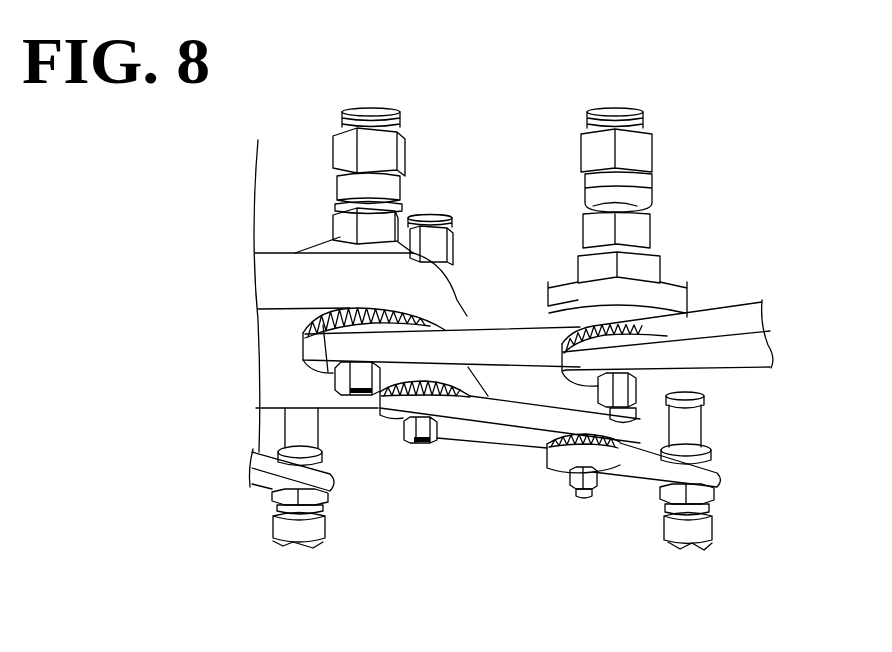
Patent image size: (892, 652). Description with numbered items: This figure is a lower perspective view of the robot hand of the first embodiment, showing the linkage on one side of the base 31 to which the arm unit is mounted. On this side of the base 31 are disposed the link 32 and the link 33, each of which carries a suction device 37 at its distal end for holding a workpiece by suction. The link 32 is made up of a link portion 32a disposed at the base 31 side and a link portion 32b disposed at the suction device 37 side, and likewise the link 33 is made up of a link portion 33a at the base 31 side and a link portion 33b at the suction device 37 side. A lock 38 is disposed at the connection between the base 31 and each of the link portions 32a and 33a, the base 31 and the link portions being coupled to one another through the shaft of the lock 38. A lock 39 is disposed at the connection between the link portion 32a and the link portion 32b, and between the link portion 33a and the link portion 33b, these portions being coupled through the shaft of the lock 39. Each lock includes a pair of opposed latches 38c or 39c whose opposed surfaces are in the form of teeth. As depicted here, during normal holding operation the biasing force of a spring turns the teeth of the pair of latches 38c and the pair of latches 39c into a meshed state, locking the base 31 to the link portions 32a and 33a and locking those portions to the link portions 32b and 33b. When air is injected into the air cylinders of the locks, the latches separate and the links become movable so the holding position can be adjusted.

The base 31 is at (272, 267).
The link 32 is at (554, 303).
The link portion 32a is at (497, 327).
The link portion 32b is at (745, 308).
The link 33 is at (484, 479).
The link portion 33a is at (500, 425).
The link portion 33b is at (625, 472).
The suction device 37 is at (698, 428).
The lock 38 is at (376, 108).
The lock 39 is at (614, 108).
The latches 38c is at (333, 397).
The latches 39c is at (562, 335).